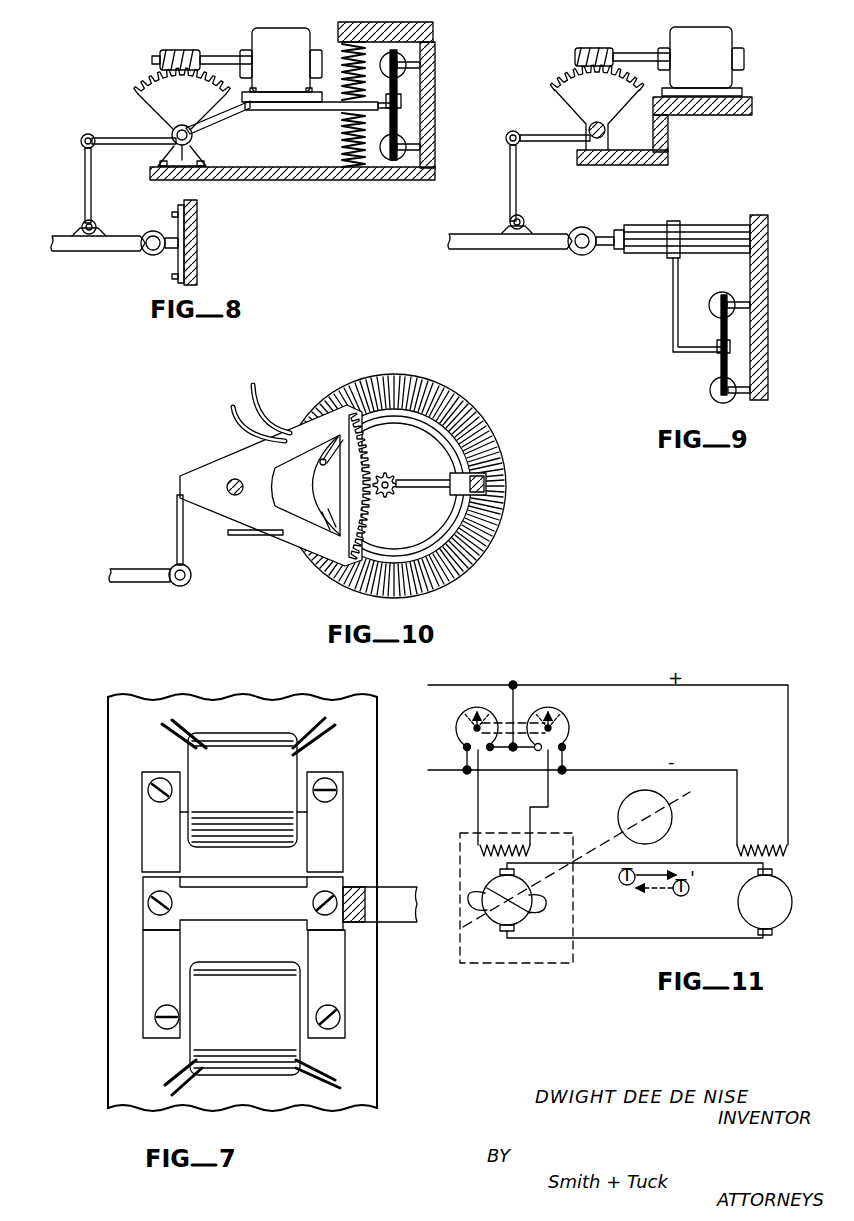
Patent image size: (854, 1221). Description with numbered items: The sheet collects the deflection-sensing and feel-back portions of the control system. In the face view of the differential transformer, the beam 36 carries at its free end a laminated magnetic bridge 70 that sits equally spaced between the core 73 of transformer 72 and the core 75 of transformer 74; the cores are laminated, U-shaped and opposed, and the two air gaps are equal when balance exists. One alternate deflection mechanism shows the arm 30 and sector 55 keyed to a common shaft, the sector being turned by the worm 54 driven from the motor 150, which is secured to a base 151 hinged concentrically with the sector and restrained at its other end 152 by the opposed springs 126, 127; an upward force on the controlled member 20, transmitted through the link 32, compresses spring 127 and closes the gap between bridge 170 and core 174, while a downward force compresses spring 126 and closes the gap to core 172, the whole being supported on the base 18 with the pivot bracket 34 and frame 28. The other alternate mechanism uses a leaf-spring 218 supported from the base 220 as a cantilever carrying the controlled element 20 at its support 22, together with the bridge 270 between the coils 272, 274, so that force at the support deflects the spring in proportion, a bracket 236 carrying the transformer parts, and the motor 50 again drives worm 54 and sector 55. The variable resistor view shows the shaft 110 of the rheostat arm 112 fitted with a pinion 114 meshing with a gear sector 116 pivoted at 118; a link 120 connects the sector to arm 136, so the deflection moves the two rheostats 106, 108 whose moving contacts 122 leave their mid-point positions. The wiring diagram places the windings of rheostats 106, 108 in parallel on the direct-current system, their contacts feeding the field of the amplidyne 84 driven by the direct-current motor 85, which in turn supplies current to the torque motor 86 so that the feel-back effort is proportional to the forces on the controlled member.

In FIG. 8, the base 18 is at (187, 247).
In FIG. 8, the controlled member 20 is at (90, 252).
In FIG. 9, the controlled member 20 is at (474, 250).
In FIG. 9, the support 22 is at (584, 256).
In FIG. 8, the frame 28 is at (246, 179).
In FIG. 9, the frame 28 is at (596, 160).
In FIG. 8, the crank arm 30 is at (109, 137).
In FIG. 9, the crank arm 30 is at (548, 134).
In FIG. 8, the link 32 is at (84, 186).
In FIG. 9, the link 32 is at (511, 190).
In FIG. 8, the pivot bracket 34 is at (163, 152).
In FIG. 7, the beam 36 is at (375, 917).
In FIG. 9, the motor 50 is at (689, 75).
In FIG. 8, the worm 54 is at (179, 50).
In FIG. 8, the sector 55 is at (170, 107).
In FIG. 9, the sector 55 is at (584, 106).
In FIG. 7, the laminated magnetic bridge 70 is at (231, 917).
In FIG. 7, the transformer 72 is at (229, 784).
In FIG. 7, the core 73 is at (338, 823).
In FIG. 7, the transformer 74 is at (228, 1009).
In FIG. 7, the core 75 is at (338, 981).
In FIG. 11, the amplidyne 84 is at (496, 966).
In FIG. 11, the D. C. motor 85 is at (626, 802).
In FIG. 11, the torque motor 86 is at (784, 913).
In FIG. 10, the rheostat 106 is at (500, 524).
In FIG. 11, the rheostat 106 is at (456, 737).
In FIG. 10, the rheostat 108 is at (458, 578).
In FIG. 11, the rheostat 108 is at (573, 732).
In FIG. 10, the shaft 110 is at (390, 494).
In FIG. 10, the rheostat arm 112 is at (411, 479).
In FIG. 10, the pinion 114 is at (387, 476).
In FIG. 10, the gear sector 116 is at (356, 487).
In FIG. 10, the pivot 118 is at (229, 478).
In FIG. 10, the link 120 is at (176, 528).
In FIG. 10, the moving contacts 122 is at (493, 480).
In FIG. 8, the spring 126 is at (338, 71).
In FIG. 8, the spring 127 is at (343, 150).
In FIG. 10, the arm 136 is at (125, 574).
In FIG. 8, the motor 150 is at (268, 73).
In FIG. 8, the base 151 is at (275, 107).
In FIG. 8, the end 152 is at (348, 107).
In FIG. 8, the bridge 170 is at (403, 101).
In FIG. 8, the core 172 is at (408, 58).
In FIG. 8, the core 174 is at (396, 162).
In FIG. 9, the leaf-spring 218 is at (701, 223).
In FIG. 9, the base 220 is at (762, 284).
In FIG. 9, the bracket 236 is at (672, 306).
In FIG. 9, the bridge 270 is at (733, 347).
In FIG. 9, the coil 272 is at (719, 298).
In FIG. 9, the coil 274 is at (708, 392).